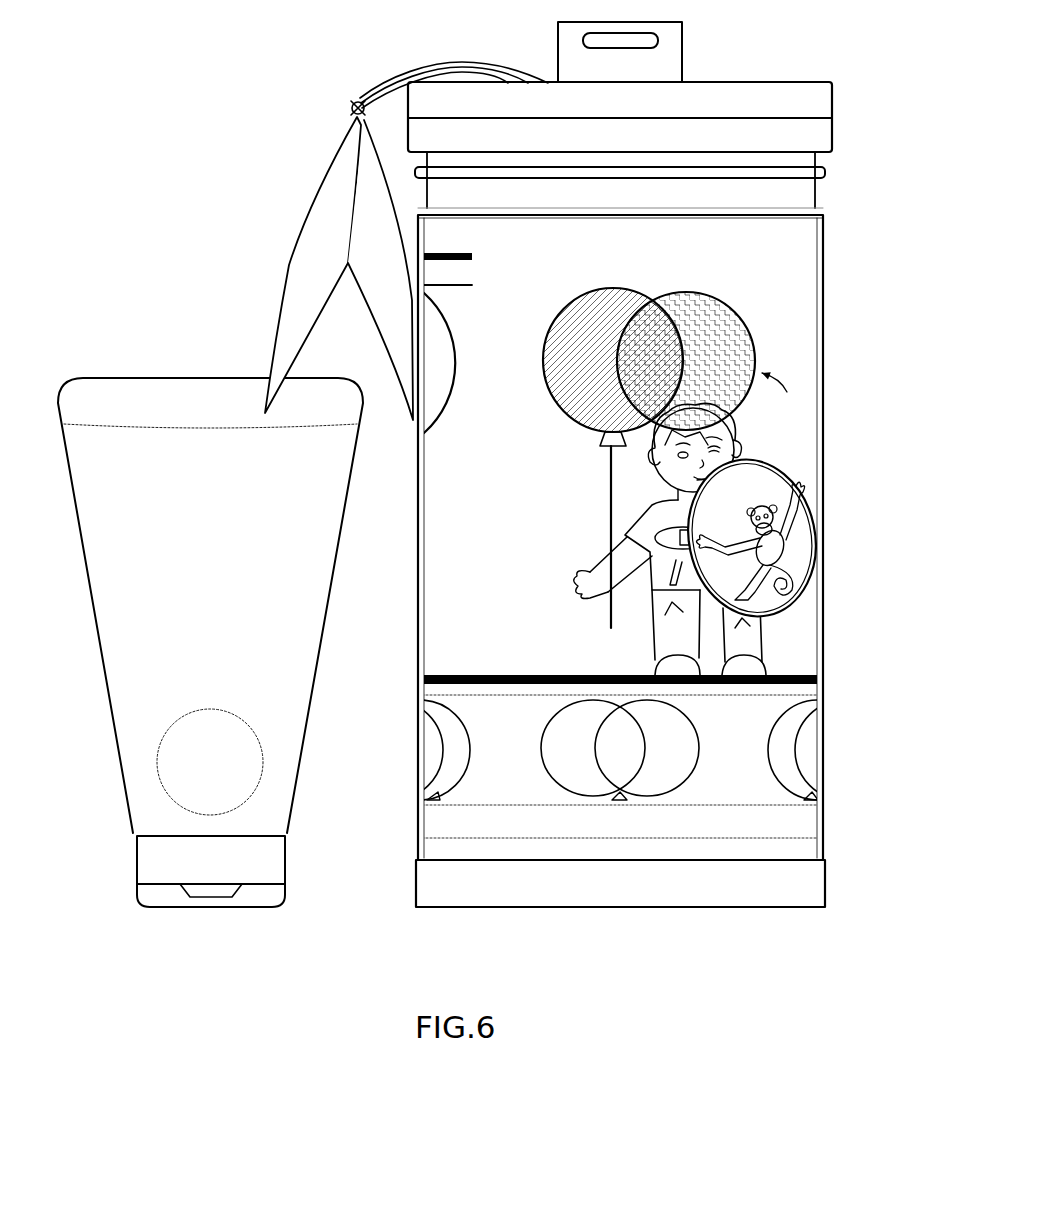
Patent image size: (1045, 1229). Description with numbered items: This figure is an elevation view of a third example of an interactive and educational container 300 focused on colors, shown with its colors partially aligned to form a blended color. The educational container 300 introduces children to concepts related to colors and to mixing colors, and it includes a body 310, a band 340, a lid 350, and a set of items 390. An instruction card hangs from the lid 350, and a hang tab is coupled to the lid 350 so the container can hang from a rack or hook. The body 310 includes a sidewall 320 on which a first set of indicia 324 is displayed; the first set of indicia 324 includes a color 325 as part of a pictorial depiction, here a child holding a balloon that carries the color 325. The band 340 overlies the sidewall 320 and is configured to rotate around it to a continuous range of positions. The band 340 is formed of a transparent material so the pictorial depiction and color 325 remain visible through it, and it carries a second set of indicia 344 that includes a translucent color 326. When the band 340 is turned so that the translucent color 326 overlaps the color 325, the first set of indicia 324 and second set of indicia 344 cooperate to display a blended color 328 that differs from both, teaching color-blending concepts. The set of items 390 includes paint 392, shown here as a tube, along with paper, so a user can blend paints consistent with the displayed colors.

The educational container 300 is at (289, 60).
The body 310 is at (866, 175).
The sidewall 320 is at (808, 214).
The first set of indicia 324 is at (524, 390).
The color 325 is at (573, 405).
The color 326 is at (714, 304).
The blended color 328 is at (646, 312).
The band 340 is at (804, 320).
The second set of indicia 344 is at (784, 393).
The lid 350 is at (817, 85).
The set of items 390 is at (130, 361).
The paint 392 is at (124, 626).